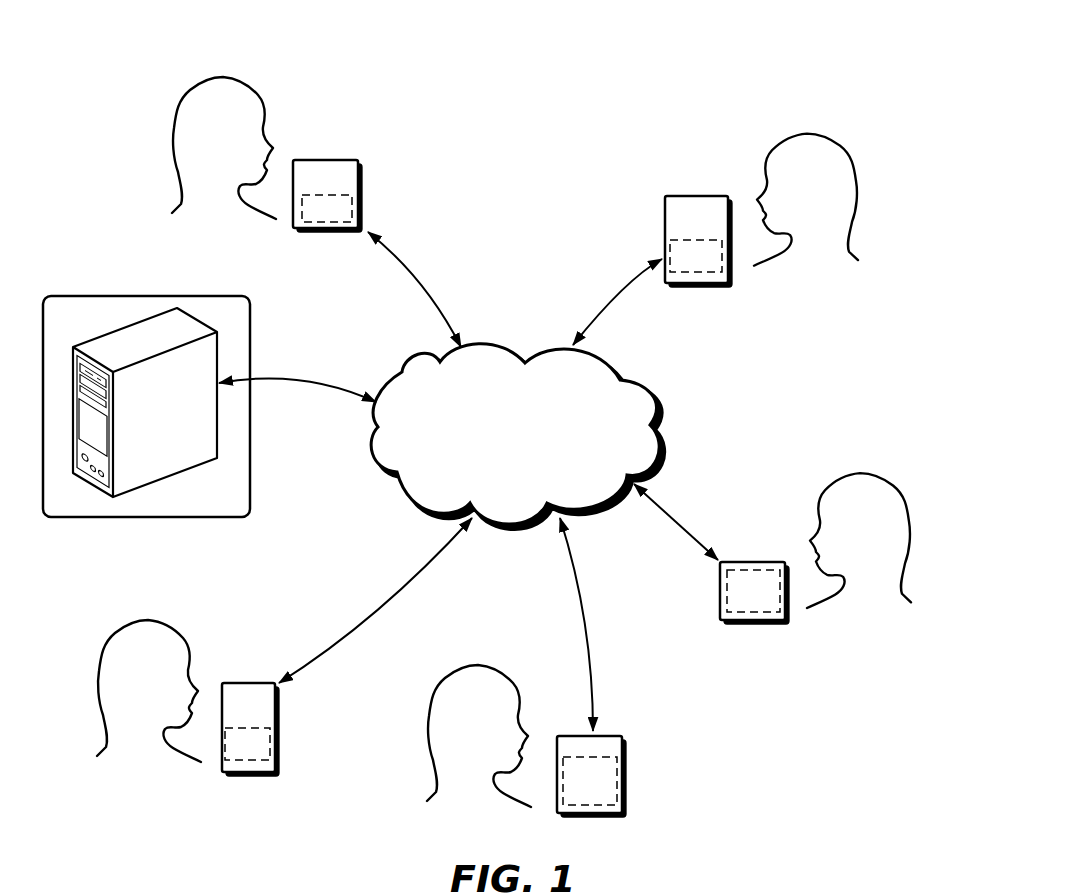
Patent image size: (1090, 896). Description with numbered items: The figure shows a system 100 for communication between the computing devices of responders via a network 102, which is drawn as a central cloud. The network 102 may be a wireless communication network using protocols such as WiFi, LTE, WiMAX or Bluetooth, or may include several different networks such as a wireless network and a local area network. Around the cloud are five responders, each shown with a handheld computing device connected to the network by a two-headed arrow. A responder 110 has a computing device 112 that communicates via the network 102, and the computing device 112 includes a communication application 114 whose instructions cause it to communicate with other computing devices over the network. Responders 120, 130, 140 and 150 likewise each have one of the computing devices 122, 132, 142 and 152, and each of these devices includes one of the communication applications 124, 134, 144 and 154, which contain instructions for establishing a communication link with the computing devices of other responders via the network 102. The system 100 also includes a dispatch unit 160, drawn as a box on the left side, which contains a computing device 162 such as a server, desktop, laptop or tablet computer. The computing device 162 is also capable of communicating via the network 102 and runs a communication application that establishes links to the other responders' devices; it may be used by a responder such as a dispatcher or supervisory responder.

The system 100 is at (708, 72).
The network 102 is at (517, 436).
The responder 110 is at (179, 112).
The computing device 112 is at (360, 163).
The communication application 114 is at (355, 199).
The responder 120 is at (842, 146).
The computing device 122 is at (700, 196).
The communication application 124 is at (670, 243).
The responder 130 is at (875, 478).
The computing device 132 is at (720, 596).
The communication application 134 is at (760, 616).
The responder 140 is at (433, 716).
The computing device 142 is at (612, 736).
The communication application 144 is at (620, 780).
The responder 150 is at (102, 672).
The computing device 152 is at (247, 683).
The communication application 154 is at (276, 744).
The dispatch unit 160 is at (105, 297).
The computing device 162 is at (195, 316).